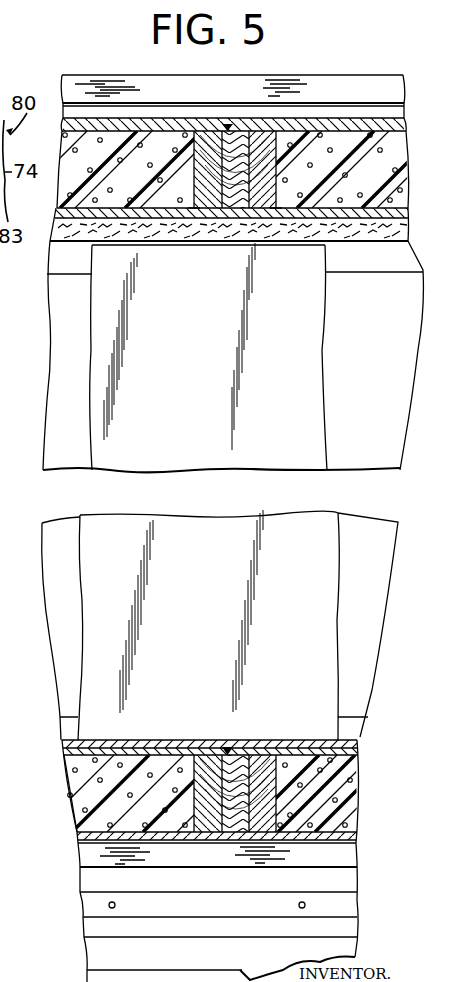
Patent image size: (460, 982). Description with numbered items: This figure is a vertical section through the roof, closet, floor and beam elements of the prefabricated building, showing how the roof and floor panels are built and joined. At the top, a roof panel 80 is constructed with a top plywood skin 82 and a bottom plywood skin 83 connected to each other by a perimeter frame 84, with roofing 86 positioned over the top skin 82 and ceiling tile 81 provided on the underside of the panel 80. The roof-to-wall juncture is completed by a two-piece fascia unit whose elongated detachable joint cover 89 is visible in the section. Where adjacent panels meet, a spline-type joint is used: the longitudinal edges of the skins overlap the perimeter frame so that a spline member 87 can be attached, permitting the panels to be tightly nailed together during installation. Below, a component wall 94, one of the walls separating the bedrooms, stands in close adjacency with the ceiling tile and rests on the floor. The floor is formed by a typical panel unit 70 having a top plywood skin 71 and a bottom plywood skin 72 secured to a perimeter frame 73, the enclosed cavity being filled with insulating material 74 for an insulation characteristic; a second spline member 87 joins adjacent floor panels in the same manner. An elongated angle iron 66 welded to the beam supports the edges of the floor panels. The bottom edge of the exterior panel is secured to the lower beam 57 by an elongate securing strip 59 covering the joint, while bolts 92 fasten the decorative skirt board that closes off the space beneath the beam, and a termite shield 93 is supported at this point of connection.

The joint cover 89 is at (327, 84).
The roofing 86 is at (400, 115).
The top plywood skin 82 is at (404, 125).
The roof panel 80 is at (62, 163).
The bottom plywood skin 83 is at (405, 210).
The ceiling tile 81 is at (368, 232).
The perimeter frame 84 is at (200, 208).
The spline member 87 is at (227, 200).
The securing strip 59 is at (62, 270).
The component wall 94 is at (102, 343).
The top plywood skin 71 is at (180, 748).
The perimeter frame 73 is at (212, 750).
The panel unit 70 is at (65, 780).
The insulating material 74 is at (77, 813).
The bottom plywood skin 72 is at (350, 842).
The angle iron 66 is at (345, 860).
The lower beam 57 is at (88, 885).
The bolt 92 is at (115, 905).
The termite shield 93 is at (93, 928).